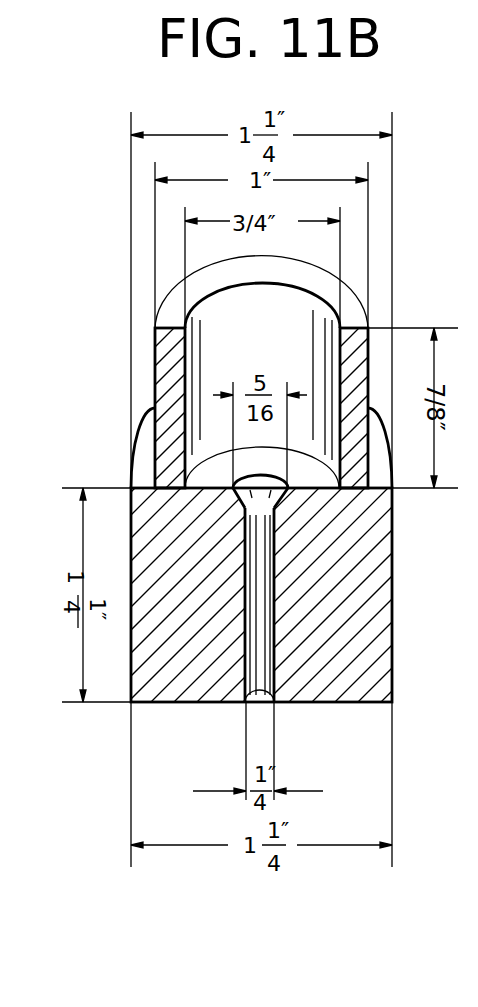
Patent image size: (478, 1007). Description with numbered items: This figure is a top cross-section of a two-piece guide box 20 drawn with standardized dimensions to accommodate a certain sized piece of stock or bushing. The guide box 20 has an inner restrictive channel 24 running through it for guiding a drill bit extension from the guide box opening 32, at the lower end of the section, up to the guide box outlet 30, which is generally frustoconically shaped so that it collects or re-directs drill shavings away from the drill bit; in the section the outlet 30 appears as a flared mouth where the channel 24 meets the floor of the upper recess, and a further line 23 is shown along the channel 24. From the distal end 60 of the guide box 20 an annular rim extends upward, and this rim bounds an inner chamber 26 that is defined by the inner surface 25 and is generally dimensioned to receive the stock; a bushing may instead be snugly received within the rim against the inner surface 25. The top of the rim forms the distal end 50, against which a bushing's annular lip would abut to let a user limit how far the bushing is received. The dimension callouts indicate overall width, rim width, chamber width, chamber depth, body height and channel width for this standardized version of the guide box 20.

The guide box 20 is at (370, 613).
The passage 23 is at (270, 642).
The inner restrictive channel 24 is at (270, 667).
The inner surface 25 is at (185, 384).
The inner chamber 26 is at (278, 345).
The guide box outlet 30 is at (272, 509).
The guide box opening 32 is at (262, 694).
The distal end of annular rim 50 is at (172, 313).
The distal end of guide box 60 is at (148, 470).